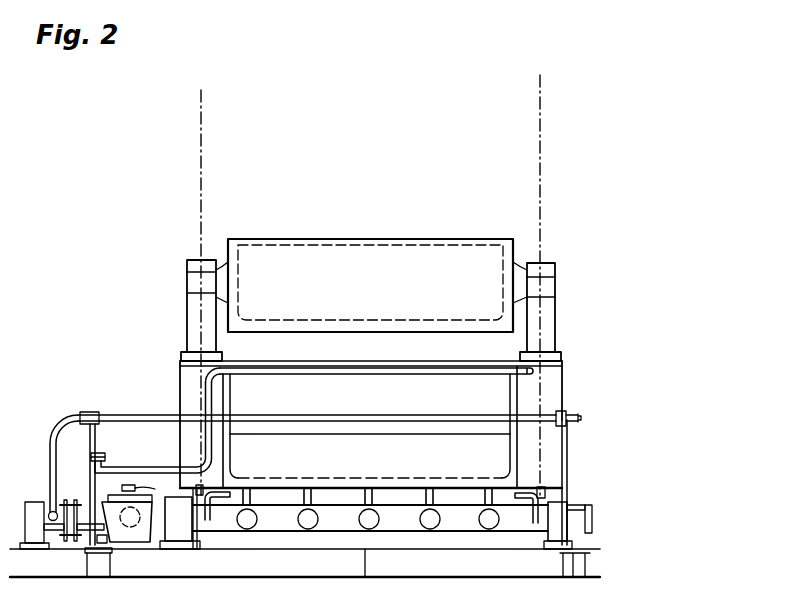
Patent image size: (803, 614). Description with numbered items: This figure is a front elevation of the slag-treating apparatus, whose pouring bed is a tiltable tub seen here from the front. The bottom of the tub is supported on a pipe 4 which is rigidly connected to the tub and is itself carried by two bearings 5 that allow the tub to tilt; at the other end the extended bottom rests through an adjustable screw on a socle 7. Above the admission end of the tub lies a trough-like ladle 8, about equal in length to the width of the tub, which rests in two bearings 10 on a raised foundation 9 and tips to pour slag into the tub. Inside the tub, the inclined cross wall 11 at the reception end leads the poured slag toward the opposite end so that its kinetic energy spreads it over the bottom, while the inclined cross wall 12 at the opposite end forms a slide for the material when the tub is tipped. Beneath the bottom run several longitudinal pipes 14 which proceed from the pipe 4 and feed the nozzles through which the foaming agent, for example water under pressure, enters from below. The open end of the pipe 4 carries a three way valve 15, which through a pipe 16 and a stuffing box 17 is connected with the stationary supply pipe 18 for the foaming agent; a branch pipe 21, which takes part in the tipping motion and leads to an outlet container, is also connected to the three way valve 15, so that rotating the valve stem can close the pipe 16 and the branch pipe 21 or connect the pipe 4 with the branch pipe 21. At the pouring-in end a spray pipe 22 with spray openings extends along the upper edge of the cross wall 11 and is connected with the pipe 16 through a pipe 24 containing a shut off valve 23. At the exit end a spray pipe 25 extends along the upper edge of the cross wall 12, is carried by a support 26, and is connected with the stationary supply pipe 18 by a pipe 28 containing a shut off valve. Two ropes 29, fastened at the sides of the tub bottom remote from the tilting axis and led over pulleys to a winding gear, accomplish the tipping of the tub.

The pipe 4 is at (290, 521).
The bearings 5 is at (190, 542).
The socle 7 is at (388, 570).
The trough-like ladle 8 is at (384, 241).
The raised foundation 9 is at (562, 381).
The bearings 10 is at (187, 327).
The cross wall 11 is at (438, 367).
The cross wall 12 is at (460, 434).
The pipes 14 is at (240, 528).
The three way valve 15 is at (131, 545).
The pipe 16 is at (95, 563).
The stuffing box 17 is at (70, 542).
The supply pipe 18 is at (26, 512).
The branch pipe 21 is at (136, 523).
The spray pipe 22 is at (333, 374).
The shut off valve 23 is at (105, 457).
The pipe 24 is at (160, 467).
The spray pipe 25 is at (378, 416).
The support 26 is at (90, 452).
The pipe 28 is at (50, 457).
The ropes 29 is at (203, 173).